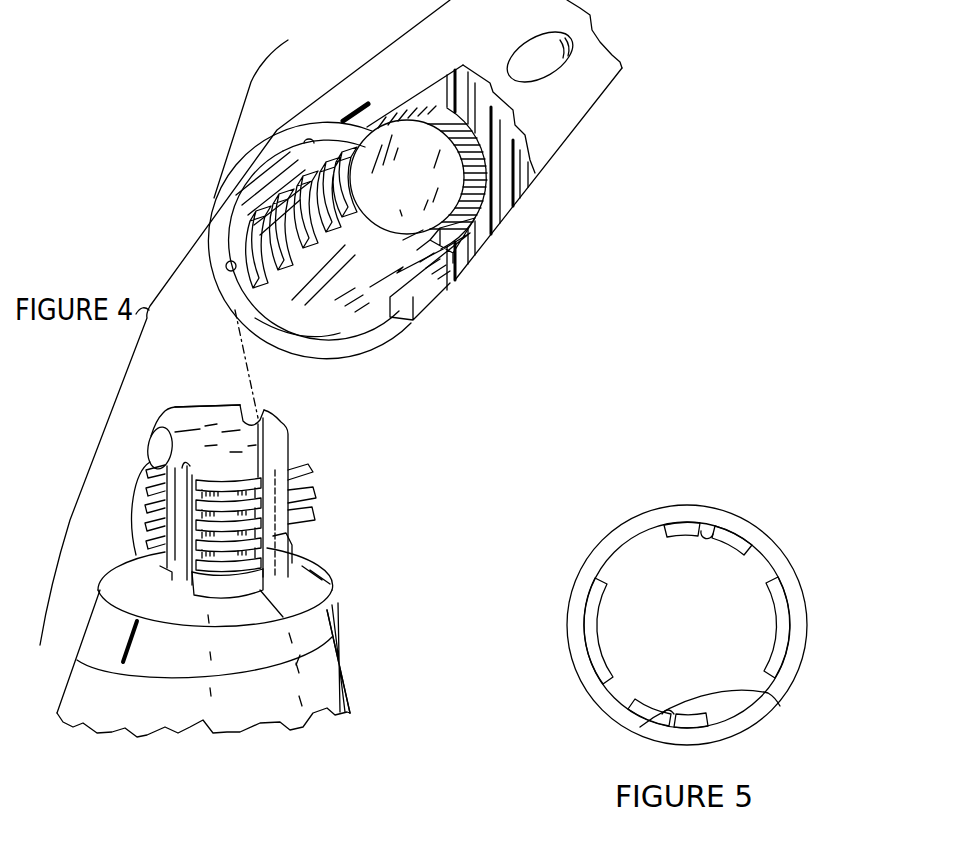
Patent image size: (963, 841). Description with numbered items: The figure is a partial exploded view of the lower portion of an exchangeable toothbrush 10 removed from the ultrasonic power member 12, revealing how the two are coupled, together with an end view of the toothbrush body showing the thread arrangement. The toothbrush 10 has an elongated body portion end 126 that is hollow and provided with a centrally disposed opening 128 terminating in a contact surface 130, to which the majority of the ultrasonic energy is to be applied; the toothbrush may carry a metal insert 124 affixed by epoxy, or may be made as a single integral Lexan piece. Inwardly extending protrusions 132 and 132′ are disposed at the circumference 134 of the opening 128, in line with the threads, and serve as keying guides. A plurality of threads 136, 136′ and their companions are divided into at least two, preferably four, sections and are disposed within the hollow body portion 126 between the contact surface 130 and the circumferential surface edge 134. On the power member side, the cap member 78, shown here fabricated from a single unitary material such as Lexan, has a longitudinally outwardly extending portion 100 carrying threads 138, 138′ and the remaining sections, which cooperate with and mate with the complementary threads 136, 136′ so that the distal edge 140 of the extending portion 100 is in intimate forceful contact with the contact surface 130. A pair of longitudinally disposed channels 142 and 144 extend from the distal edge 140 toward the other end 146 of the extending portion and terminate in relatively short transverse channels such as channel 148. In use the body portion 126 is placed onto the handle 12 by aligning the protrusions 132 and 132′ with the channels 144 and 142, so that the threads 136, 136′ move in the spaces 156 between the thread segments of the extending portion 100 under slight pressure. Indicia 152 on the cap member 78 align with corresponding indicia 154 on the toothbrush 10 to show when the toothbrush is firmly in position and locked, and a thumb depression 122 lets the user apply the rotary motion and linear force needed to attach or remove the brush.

In FIG. 4, the toothbrush 10 is at (397, 42).
In FIG. 4, the power member 12 is at (357, 673).
In FIG. 4, the cap member 78 is at (321, 581).
In FIG. 4, the longitudinally outwardly extending portion 100 is at (275, 578).
In FIG. 4, the thumb depression 122 is at (568, 41).
In FIG. 4, the metal insert 124 is at (481, 200).
In FIG. 4, the elongated body portion end 126 is at (566, 111).
In FIG. 5, the elongated body portion end 126 is at (598, 543).
In FIG. 4, the centrally disposed opening 128 is at (306, 140).
In FIG. 4, the contact surface 130 is at (437, 189).
In FIG. 5, the contact surface 130 is at (739, 634).
In FIG. 4, the inwardly extending protrusion 132 is at (229, 271).
In FIG. 5, the inwardly extending protrusion 132 is at (703, 533).
In FIG. 5, the inwardly extending protrusion 132′ is at (772, 702).
In FIG. 4, the circumference 134 is at (221, 247).
In FIG. 4, the thread 136 is at (447, 279).
In FIG. 5, the thread 136 is at (599, 632).
In FIG. 4, the thread 136′ is at (333, 263).
In FIG. 5, the thread 136′ is at (684, 530).
In FIG. 4, the thread 138 is at (292, 481).
In FIG. 4, the thread 138′ is at (245, 488).
In FIG. 4, the distal edge 140 is at (223, 456).
In FIG. 4, the longitudinally disposed channel 142 is at (158, 433).
In FIG. 4, the longitudinally disposed channel 144 is at (265, 421).
In FIG. 4, the other end 146 is at (163, 581).
In FIG. 4, the short channel 148 is at (160, 569).
In FIG. 4, the indicia 152 is at (125, 650).
In FIG. 4, the indicia 154 is at (366, 102).
In FIG. 4, the space 156 is at (271, 550).